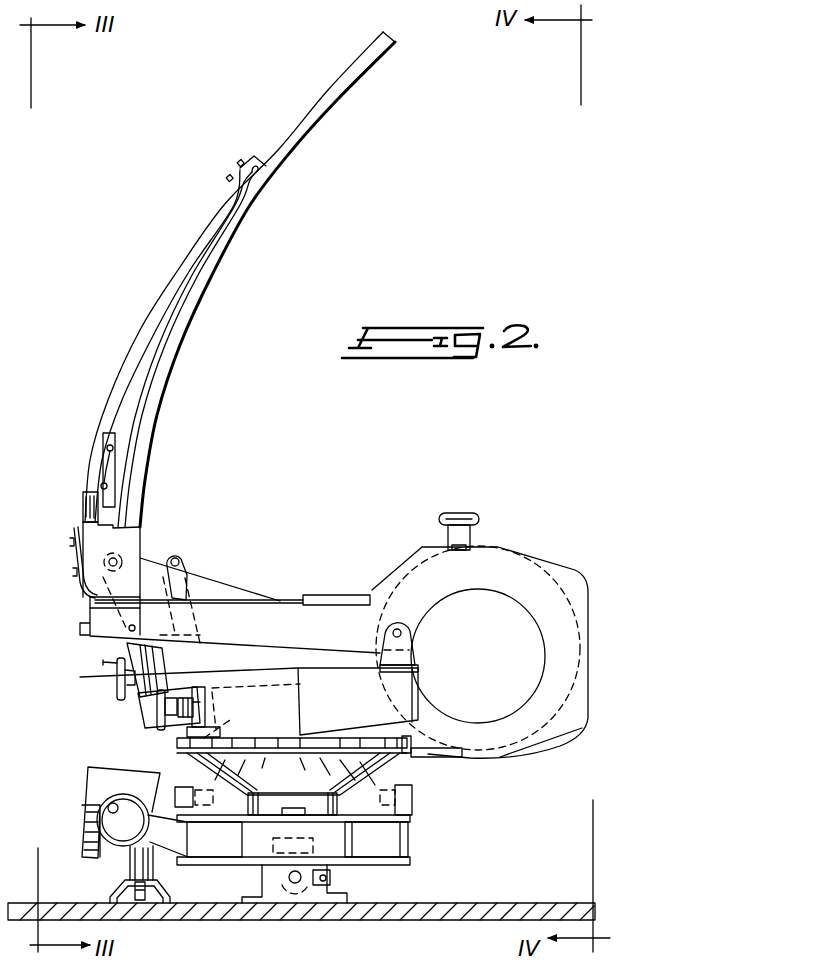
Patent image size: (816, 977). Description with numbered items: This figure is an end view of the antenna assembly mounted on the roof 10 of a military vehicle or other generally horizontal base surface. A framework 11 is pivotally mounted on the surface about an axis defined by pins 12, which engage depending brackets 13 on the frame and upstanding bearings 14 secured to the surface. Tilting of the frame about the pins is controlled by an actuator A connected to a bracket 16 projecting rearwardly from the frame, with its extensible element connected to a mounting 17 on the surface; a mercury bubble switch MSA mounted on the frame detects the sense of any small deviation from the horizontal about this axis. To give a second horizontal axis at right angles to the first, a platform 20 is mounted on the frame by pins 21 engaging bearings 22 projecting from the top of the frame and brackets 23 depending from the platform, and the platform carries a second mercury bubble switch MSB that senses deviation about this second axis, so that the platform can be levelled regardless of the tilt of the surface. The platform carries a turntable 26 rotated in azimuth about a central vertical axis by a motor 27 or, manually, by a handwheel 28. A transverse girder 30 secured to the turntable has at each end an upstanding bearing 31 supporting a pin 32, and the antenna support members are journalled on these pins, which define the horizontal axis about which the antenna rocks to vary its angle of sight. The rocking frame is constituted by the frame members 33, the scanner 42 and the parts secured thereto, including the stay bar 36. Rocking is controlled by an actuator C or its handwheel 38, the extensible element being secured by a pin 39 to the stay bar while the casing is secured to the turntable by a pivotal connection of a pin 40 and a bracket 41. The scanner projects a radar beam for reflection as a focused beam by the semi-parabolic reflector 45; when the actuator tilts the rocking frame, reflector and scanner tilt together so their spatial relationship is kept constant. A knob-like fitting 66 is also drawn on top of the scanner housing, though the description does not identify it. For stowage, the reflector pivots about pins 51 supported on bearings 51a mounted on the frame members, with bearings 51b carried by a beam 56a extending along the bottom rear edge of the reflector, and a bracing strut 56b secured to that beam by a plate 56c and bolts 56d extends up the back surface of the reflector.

The roof 10 is at (493, 903).
The framework 11 is at (390, 842).
The pins 12 is at (300, 884).
The depending brackets 13 is at (333, 886).
The upstanding bearings 14 is at (280, 903).
The bracket 16 is at (170, 850).
The mounting 17 is at (116, 889).
The platform 20 is at (404, 760).
The pins 21 is at (210, 816).
The bearings 22 is at (178, 785).
The brackets 23 is at (358, 803).
The turntable 26 is at (416, 746).
The motor 27 is at (249, 680).
The handwheel 28 is at (157, 720).
The transverse girder 30 is at (338, 712).
The upstanding bearing 31 is at (390, 647).
The pin 32 is at (395, 628).
The frame members 33 is at (264, 618).
The stay bar 36 is at (235, 592).
The handwheel 38 is at (113, 680).
The pin 39 is at (180, 557).
The pin 40 is at (224, 716).
The bracket 41 is at (173, 735).
The scanner 42 is at (529, 573).
The semi-parabolic reflector 45 is at (258, 206).
The pins 51 is at (105, 561).
The bearings 51a is at (108, 583).
The bearings 51b is at (124, 533).
The beam 56a is at (84, 504).
The bracing strut 56b is at (124, 350).
The plate 56c is at (106, 440).
The bolts 56d is at (101, 466).
The knob 66 is at (460, 514).
The actuator A is at (96, 780).
The actuator C is at (188, 660).
The mercury bubble switch MSA is at (297, 812).
The mercury bubble switch MSB is at (205, 773).